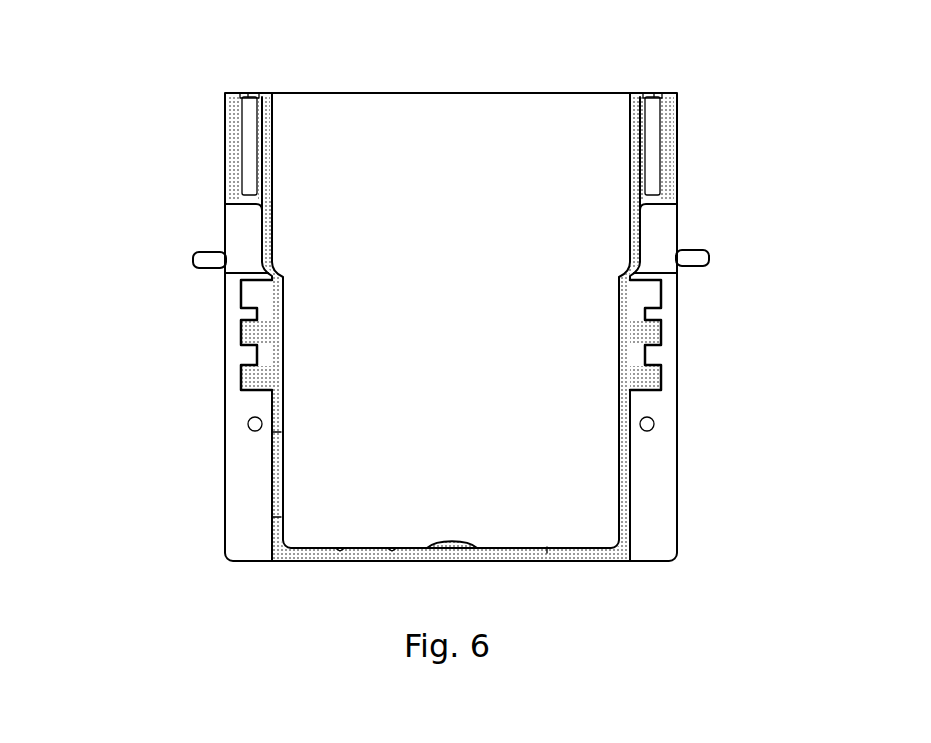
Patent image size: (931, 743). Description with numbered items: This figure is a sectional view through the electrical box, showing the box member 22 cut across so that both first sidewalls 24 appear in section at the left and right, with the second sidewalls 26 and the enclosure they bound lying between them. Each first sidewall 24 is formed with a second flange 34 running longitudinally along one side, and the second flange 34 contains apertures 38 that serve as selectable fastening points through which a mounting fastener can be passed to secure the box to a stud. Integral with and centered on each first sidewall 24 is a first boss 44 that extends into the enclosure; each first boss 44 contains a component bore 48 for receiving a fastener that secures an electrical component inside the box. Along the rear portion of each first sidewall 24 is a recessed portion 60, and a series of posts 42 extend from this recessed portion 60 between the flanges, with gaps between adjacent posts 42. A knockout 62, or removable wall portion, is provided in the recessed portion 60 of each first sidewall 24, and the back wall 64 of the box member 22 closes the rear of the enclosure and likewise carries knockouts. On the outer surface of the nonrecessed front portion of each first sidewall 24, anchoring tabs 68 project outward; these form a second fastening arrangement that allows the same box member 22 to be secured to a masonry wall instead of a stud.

The box member 22 is at (150, 105).
The first sidewalls 24 is at (270, 240).
The second sidewalls 26 is at (437, 300).
The second flange 34 is at (236, 515).
The apertures 38 is at (247, 424).
The posts 42 is at (242, 338).
The first bosses 44 is at (270, 148).
The component bores 48 is at (247, 92).
The recessed portion 60 is at (630, 474).
The knockout 62 is at (283, 470).
The back wall 64 is at (578, 554).
The anchoring tabs 68 is at (708, 258).